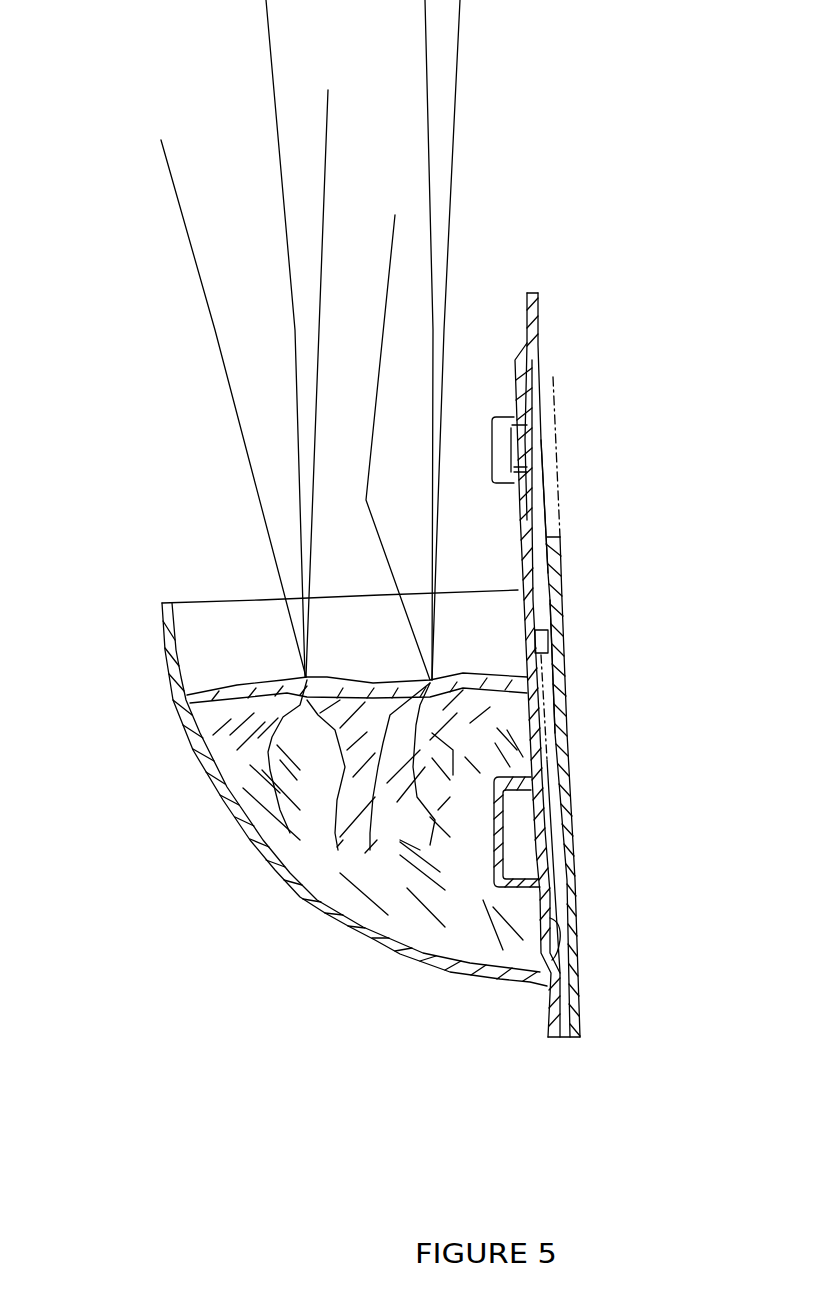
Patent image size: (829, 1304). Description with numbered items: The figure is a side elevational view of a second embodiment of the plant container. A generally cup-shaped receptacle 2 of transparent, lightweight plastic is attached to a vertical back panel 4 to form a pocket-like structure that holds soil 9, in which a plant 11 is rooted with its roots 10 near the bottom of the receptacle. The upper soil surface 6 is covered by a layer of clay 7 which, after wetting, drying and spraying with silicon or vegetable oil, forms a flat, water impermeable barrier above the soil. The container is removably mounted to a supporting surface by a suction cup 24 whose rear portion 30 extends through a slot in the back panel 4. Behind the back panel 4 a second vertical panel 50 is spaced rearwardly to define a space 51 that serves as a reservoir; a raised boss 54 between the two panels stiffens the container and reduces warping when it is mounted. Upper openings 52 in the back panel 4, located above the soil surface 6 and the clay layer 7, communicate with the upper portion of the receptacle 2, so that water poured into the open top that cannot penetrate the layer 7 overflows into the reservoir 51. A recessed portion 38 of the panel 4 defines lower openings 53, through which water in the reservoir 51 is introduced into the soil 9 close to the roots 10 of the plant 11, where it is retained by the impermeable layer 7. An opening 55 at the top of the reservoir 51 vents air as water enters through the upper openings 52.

The cup-shaped receptacle 2 is at (227, 817).
The vertical back panel 4 is at (552, 365).
The upper soil surface 6 is at (222, 703).
The clay layer 7 is at (234, 684).
The soil 9 is at (302, 843).
The roots 10 is at (470, 871).
The plant 11 is at (250, 465).
The suction cup 24 is at (532, 417).
The rear portion of suction cup 30 is at (492, 447).
The recessed portion 38 is at (503, 858).
The second vertical panel 50 is at (575, 730).
The space (reservoir) 51 is at (540, 548).
The upper openings 52 is at (548, 647).
The lower openings 53 is at (503, 813).
The raised boss 54 is at (553, 681).
The opening 55 is at (555, 540).